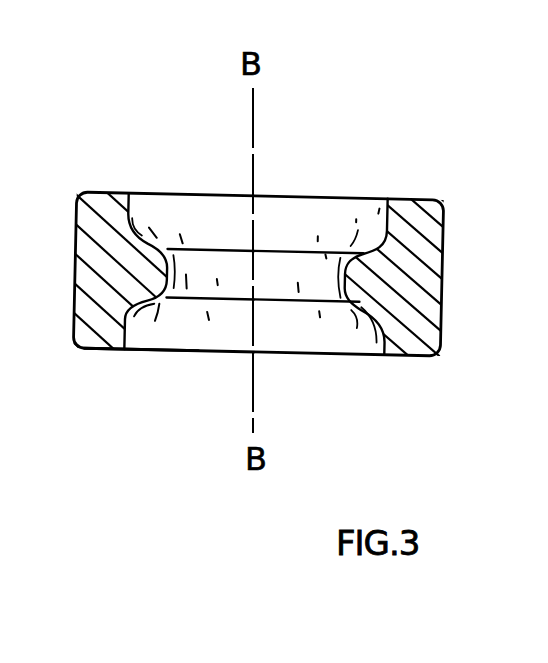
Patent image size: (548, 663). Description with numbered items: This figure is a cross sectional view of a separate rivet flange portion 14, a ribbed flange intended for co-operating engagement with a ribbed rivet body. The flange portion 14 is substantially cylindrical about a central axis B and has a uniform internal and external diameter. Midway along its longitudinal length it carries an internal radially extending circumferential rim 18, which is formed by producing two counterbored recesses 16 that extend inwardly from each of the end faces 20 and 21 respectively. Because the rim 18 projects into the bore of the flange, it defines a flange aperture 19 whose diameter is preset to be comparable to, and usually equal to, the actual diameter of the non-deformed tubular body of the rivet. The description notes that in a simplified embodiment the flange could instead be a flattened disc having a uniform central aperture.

The rivet flange portion 14 is at (425, 152).
The counterbored recess 16 is at (300, 225).
The internal radially extending circumferential rim 18 is at (355, 283).
The flange aperture 19 is at (287, 285).
The end face 20 is at (122, 192).
The end face 21 is at (105, 350).